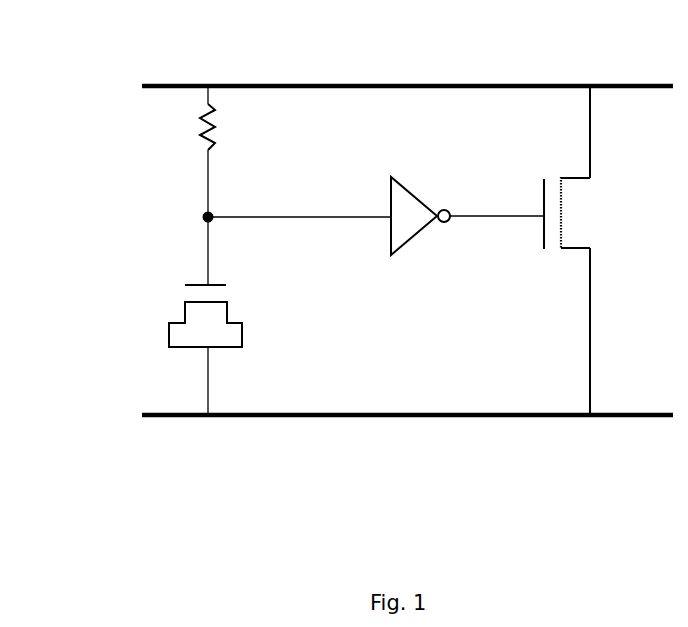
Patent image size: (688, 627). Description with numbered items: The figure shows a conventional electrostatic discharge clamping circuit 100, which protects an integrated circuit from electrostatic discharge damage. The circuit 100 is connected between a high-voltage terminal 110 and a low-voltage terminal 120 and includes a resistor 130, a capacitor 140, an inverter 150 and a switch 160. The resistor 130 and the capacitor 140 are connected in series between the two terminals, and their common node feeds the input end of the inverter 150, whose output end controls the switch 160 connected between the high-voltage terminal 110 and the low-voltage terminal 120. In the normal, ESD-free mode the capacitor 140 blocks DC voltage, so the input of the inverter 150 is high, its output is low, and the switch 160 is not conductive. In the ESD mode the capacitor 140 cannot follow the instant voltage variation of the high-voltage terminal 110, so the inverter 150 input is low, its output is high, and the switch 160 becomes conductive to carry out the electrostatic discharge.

The ESD clamping circuit 100 is at (98, 520).
The high-voltage terminal 110 is at (322, 84).
The low-voltage terminal 120 is at (330, 418).
The resistor 130 is at (205, 124).
The capacitor 140 is at (168, 323).
The inverter 150 is at (425, 203).
The switch 160 is at (561, 210).